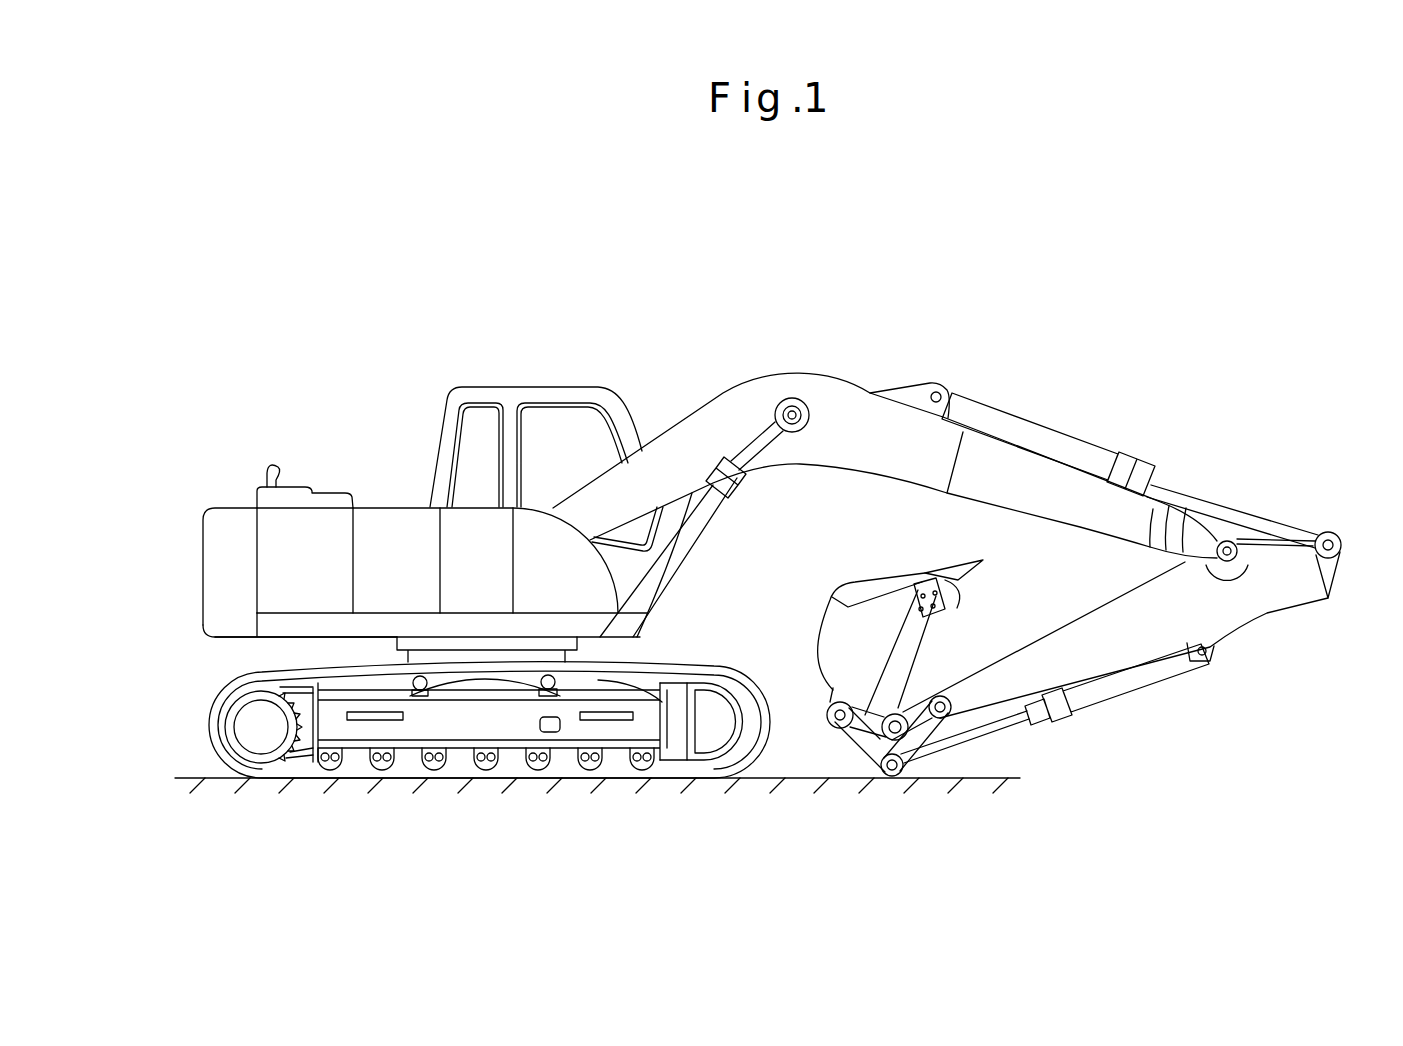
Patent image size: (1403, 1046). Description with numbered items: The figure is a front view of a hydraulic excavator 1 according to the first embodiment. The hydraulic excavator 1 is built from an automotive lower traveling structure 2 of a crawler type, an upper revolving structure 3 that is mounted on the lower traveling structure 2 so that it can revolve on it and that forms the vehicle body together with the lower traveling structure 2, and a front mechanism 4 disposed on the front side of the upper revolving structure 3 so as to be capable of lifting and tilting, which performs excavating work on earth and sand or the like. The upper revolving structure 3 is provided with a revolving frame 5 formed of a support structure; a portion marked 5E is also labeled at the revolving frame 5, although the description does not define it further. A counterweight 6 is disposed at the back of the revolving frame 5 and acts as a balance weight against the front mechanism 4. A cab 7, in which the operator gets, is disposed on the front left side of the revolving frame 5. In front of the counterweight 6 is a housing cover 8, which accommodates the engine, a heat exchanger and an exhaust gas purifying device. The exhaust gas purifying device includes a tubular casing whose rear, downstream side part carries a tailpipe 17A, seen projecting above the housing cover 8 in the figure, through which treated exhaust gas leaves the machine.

The hydraulic excavator 1 is at (650, 375).
The lower traveling structure 2 is at (520, 733).
The upper revolving structure 3 is at (392, 456).
The front mechanism 4 is at (820, 380).
The revolving frame 5 is at (600, 627).
The rear end portion of swing frame 5E is at (312, 627).
The counterweight 6 is at (237, 537).
The cab 7 is at (540, 392).
The housing cover 8 is at (330, 512).
The tailpipe 17A is at (271, 466).